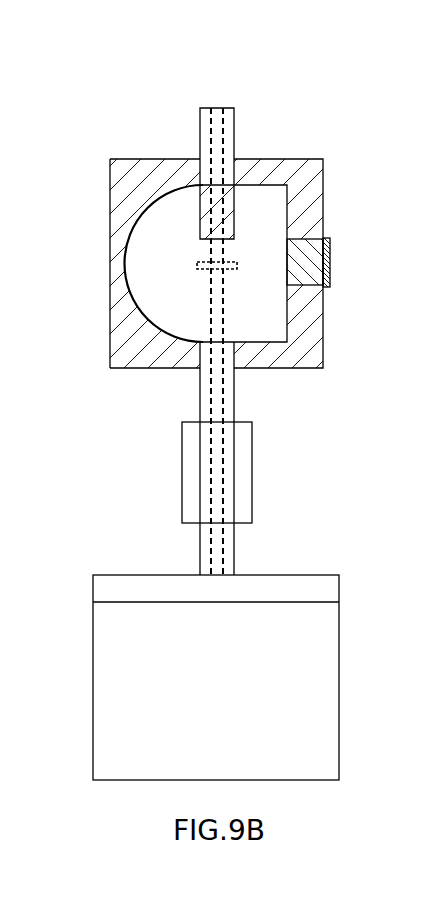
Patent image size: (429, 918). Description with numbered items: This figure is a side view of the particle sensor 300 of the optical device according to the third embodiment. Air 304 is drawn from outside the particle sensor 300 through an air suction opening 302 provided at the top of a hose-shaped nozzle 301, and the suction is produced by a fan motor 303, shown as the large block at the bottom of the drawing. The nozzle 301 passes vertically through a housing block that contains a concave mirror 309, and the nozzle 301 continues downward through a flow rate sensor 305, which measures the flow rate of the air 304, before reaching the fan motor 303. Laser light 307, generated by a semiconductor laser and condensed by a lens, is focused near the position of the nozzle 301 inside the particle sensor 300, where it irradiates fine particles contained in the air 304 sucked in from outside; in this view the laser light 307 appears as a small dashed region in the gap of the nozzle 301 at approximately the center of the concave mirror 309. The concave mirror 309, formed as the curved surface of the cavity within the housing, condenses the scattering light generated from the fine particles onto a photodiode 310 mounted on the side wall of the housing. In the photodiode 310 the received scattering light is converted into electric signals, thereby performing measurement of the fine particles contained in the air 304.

The particle sensor 300 is at (365, 118).
The hose-shaped nozzle 301 is at (235, 118).
The air suction opening 302 is at (219, 108).
The fan motor 303 is at (340, 703).
The air 304 is at (210, 400).
The flow rate sensor 305 is at (253, 493).
The laser light 307 is at (228, 272).
The concave mirror 309 is at (137, 307).
The photodiode 310 is at (327, 288).